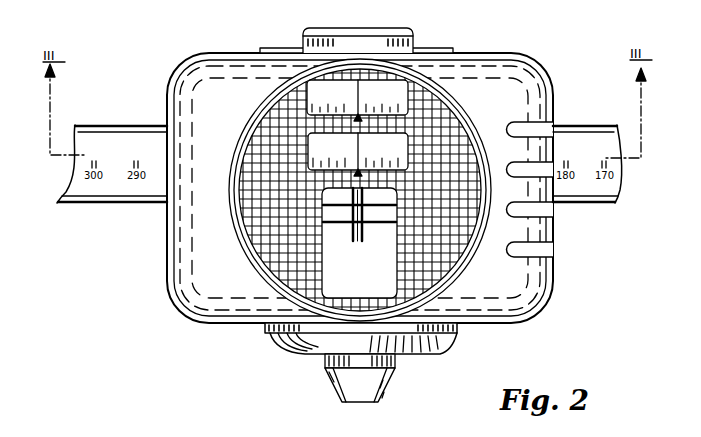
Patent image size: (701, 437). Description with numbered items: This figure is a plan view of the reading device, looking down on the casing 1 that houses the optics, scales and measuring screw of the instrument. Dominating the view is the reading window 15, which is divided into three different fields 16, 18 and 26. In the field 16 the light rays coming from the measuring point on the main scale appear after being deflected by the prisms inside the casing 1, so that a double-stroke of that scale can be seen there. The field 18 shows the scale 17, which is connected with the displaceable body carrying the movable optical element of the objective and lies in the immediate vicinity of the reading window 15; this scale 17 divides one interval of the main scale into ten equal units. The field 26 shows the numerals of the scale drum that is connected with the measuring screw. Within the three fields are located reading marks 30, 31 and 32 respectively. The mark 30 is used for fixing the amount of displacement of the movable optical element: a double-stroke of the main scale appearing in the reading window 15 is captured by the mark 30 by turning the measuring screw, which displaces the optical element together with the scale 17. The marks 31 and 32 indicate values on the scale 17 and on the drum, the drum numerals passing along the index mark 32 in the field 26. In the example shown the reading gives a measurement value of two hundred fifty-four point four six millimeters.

The casing 1 is at (360, 170).
The reading window 15 is at (254, 250).
The field 16 is at (332, 282).
The scale 17 is at (306, 146).
The field 18 is at (400, 143).
The field 26 is at (412, 50).
The reading mark 30 is at (364, 236).
The reading mark 31 is at (379, 145).
The reading mark 32 is at (360, 94).